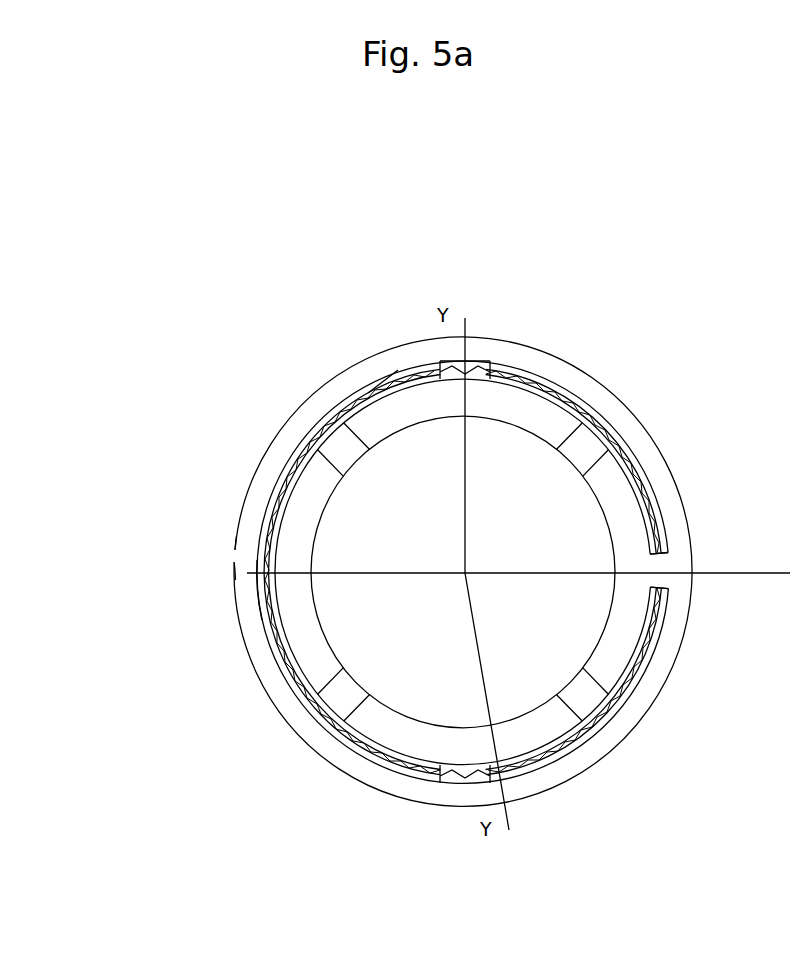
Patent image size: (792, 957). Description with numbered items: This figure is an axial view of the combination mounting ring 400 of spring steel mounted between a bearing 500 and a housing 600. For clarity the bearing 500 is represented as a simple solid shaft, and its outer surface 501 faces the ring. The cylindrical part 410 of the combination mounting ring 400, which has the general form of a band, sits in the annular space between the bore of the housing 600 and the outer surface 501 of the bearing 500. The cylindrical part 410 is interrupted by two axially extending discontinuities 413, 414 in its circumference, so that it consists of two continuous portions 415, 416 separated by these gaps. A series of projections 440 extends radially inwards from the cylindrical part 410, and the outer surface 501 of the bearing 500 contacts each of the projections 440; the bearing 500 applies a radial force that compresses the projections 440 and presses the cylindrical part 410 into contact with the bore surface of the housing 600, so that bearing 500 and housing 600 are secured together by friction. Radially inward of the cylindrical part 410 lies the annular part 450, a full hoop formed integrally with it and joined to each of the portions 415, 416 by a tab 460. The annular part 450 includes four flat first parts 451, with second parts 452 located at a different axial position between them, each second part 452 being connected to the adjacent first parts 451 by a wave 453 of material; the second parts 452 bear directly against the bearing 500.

The combination mounting ring 400 is at (612, 712).
The cylindrical part 410 is at (537, 377).
The discontinuity 413 is at (667, 570).
The discontinuity 414 is at (255, 578).
The portion of cylindrical part 415 is at (257, 554).
The portion of cylindrical part 416 is at (284, 660).
The projections 440 is at (398, 370).
The annular part 450 is at (497, 402).
The first part 451 is at (305, 510).
The second part 452 is at (362, 458).
The wave 453 is at (335, 453).
The tab 460 is at (466, 358).
The bearing 500 is at (533, 541).
The outer surface of bearing 501 is at (368, 393).
The housing 600 is at (565, 765).